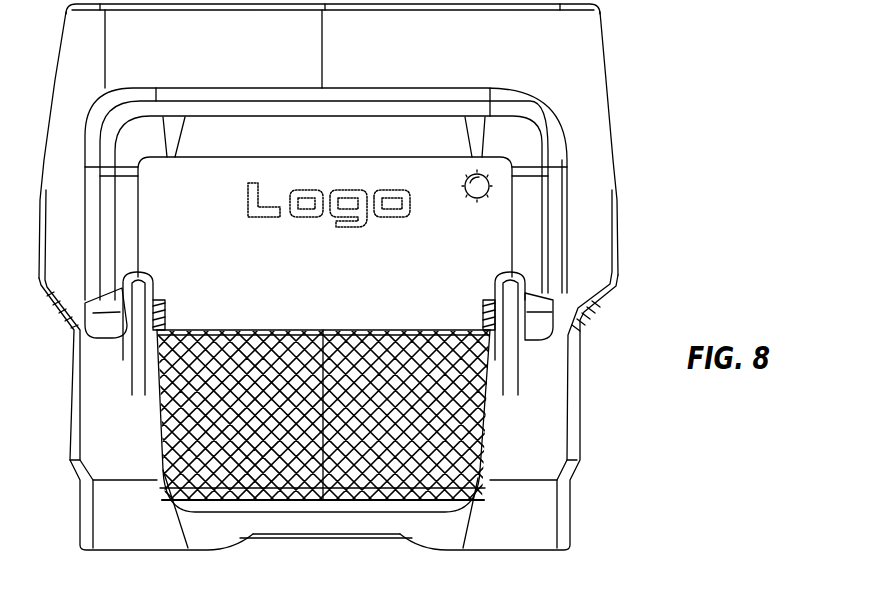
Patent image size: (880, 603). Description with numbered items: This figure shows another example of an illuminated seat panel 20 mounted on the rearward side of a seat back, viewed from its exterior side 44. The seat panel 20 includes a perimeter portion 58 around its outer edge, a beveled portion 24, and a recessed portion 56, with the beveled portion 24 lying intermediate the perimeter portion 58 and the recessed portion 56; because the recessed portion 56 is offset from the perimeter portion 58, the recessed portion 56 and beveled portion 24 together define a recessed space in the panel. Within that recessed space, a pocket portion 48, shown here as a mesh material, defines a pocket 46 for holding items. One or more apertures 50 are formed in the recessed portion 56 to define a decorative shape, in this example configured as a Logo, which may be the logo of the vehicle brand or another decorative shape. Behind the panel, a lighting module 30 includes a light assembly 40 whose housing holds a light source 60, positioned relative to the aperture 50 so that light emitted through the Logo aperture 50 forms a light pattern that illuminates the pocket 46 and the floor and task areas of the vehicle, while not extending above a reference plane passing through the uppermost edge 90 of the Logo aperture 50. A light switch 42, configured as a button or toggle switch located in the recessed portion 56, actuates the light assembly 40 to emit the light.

The seat panel 20 is at (634, 85).
The beveled portion 24 is at (300, 128).
The lighting module 30 is at (370, 128).
The light assembly 40 is at (236, 203).
The light switch 42 is at (473, 200).
The exterior side of seat panel 44 is at (592, 234).
The pocket 46 is at (340, 317).
The pocket portion 48 is at (302, 327).
The aperture 50 is at (298, 210).
The recessed portion 56 is at (497, 233).
The perimeter portion 58 is at (87, 78).
The light source 60 is at (255, 215).
The uppermost edge of aperture 90 is at (248, 183).